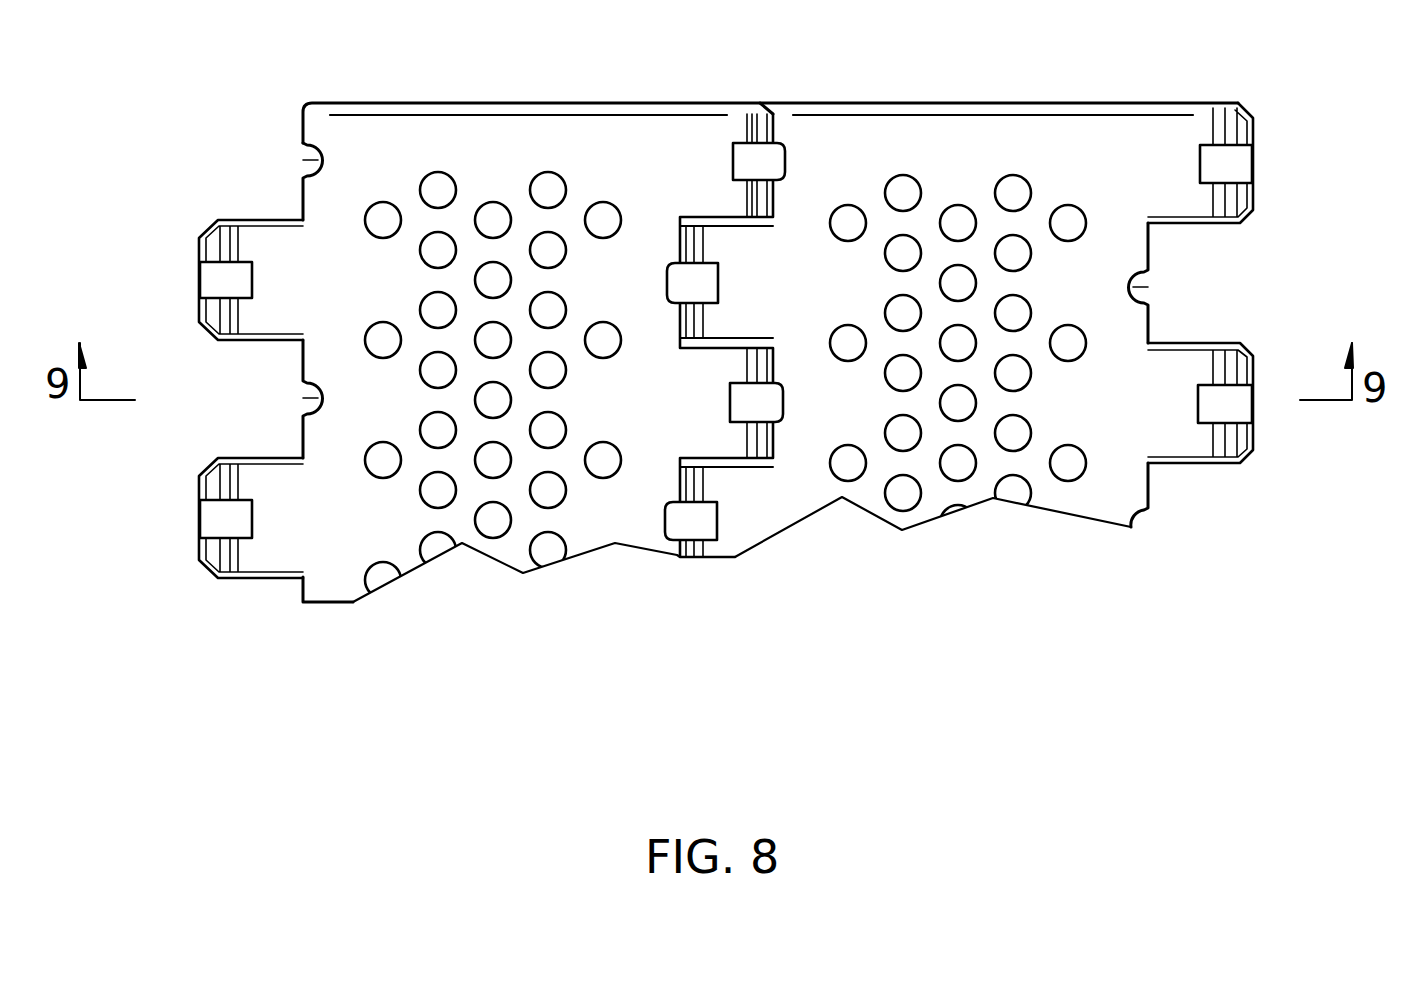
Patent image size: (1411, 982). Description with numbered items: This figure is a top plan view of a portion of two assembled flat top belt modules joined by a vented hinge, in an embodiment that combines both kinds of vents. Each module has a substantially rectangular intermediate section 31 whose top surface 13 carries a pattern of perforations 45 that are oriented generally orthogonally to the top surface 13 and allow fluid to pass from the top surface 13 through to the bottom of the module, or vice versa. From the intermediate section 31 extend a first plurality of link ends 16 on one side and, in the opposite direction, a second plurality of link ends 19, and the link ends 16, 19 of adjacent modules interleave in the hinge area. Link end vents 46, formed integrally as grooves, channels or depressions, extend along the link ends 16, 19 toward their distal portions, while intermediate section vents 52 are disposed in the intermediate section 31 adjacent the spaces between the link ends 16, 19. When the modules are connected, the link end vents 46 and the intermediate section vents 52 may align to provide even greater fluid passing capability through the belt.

The top surface 13 is at (338, 552).
The first plurality of link ends 16 is at (265, 530).
The second plurality of link ends 19 is at (710, 165).
The intermediate section 31 is at (366, 302).
The perforations 45 is at (495, 517).
The link end vents 46 is at (222, 280).
The intermediate section vents 52 is at (302, 157).